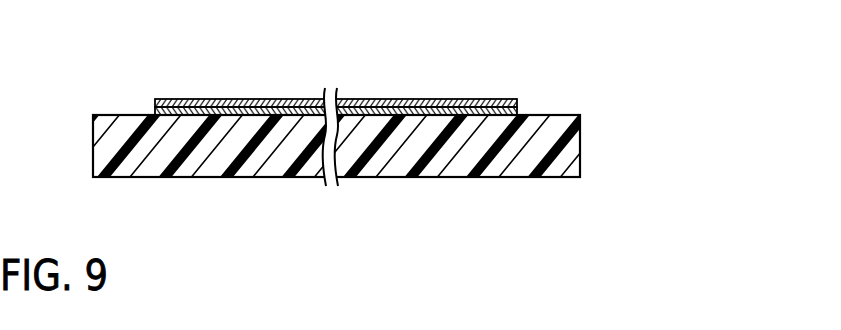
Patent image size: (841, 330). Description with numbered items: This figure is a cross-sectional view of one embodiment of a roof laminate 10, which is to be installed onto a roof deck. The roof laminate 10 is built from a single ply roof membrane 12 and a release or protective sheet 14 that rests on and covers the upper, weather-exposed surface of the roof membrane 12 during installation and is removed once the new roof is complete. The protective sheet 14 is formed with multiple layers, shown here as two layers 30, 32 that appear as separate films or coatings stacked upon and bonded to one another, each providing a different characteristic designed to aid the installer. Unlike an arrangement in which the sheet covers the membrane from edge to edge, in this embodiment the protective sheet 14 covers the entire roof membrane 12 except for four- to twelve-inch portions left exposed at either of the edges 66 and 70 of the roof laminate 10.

The roof laminate 10 is at (343, 96).
The roof membrane 12 is at (583, 124).
The protective sheet 14 is at (336, 82).
The layer 30 is at (276, 99).
The layer 32 is at (377, 99).
The edge 66 is at (557, 115).
The edge 70 is at (110, 115).